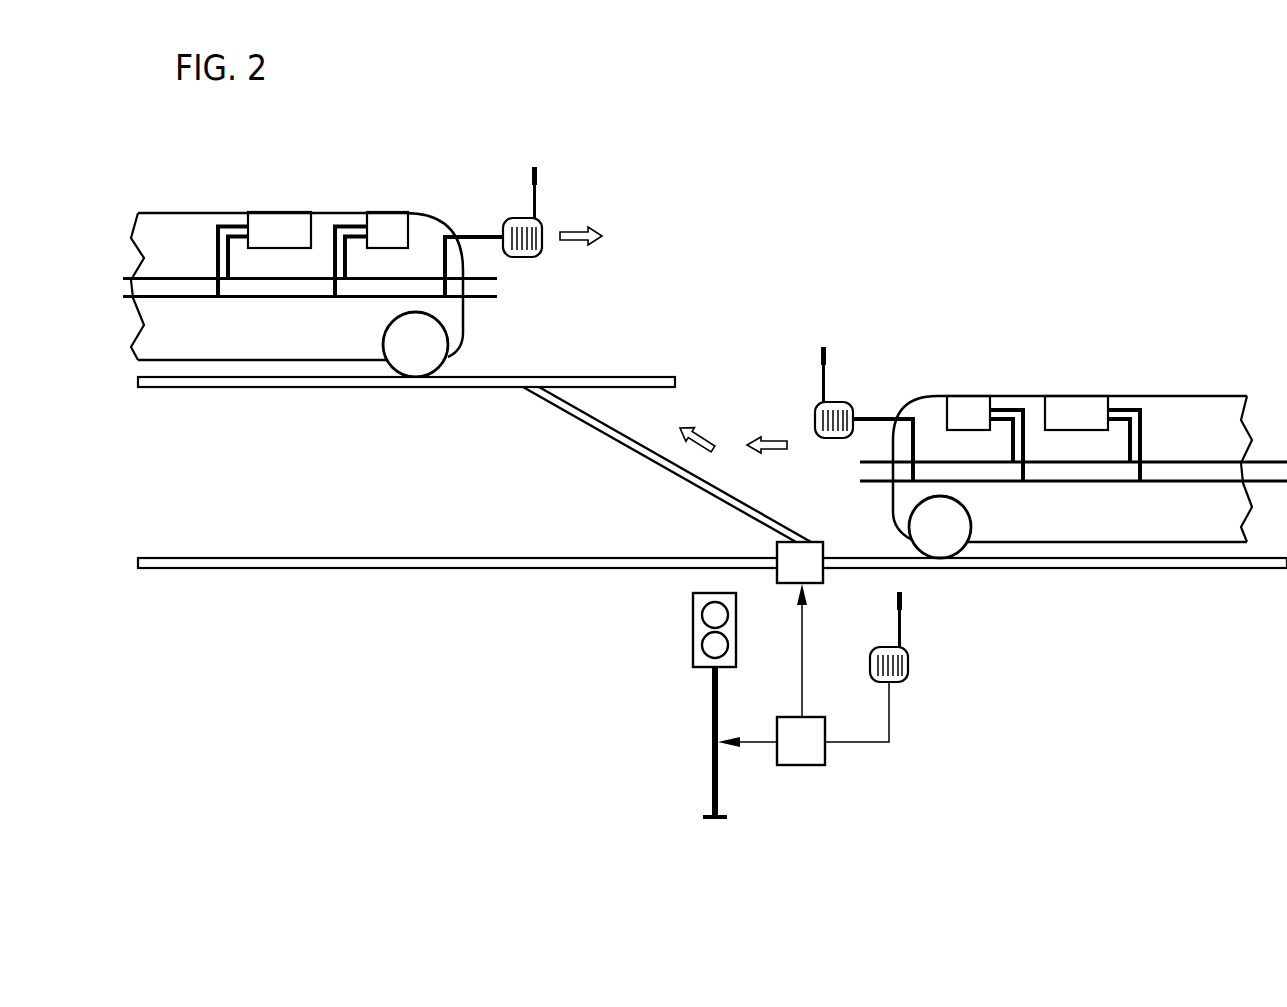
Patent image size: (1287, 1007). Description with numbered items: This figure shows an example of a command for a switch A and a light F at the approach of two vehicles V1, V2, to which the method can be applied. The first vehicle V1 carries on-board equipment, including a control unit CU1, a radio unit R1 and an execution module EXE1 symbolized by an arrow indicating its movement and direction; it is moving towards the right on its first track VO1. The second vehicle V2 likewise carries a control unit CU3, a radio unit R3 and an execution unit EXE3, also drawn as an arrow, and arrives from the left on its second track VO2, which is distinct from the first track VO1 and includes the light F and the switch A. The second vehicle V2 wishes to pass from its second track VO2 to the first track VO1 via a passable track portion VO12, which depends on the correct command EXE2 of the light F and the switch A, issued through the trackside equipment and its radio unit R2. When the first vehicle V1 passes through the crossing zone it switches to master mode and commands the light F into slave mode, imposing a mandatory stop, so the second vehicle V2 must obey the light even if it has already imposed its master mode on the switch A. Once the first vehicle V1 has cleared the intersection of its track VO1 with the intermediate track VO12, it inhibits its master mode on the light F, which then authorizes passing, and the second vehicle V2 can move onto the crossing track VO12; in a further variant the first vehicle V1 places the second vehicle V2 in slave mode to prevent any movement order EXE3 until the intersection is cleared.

The first vehicle V1 is at (160, 223).
The control unit of first vehicle CU1 is at (280, 220).
The radio unit of first vehicle R1 is at (517, 218).
The execution module of first vehicle EXE1 is at (580, 227).
The first track VO1 is at (282, 388).
The passable track portion VO12 is at (648, 454).
The second track VO2 is at (198, 560).
The switch A is at (808, 542).
The execution unit of second vehicle EXE3 is at (703, 430).
The radio unit of second vehicle R3 is at (815, 418).
The second vehicle V2 is at (1188, 405).
The control unit of second vehicle CU3 is at (1077, 402).
The light F is at (712, 728).
The command of light and switch EXE2 is at (803, 628).
The trackside radio unit R2 is at (908, 660).